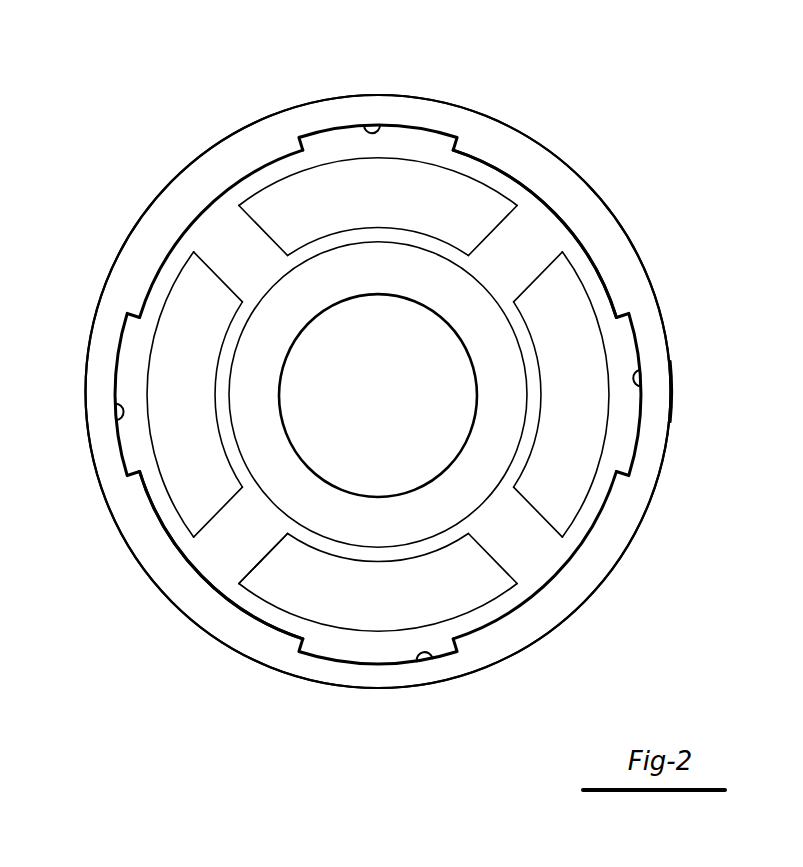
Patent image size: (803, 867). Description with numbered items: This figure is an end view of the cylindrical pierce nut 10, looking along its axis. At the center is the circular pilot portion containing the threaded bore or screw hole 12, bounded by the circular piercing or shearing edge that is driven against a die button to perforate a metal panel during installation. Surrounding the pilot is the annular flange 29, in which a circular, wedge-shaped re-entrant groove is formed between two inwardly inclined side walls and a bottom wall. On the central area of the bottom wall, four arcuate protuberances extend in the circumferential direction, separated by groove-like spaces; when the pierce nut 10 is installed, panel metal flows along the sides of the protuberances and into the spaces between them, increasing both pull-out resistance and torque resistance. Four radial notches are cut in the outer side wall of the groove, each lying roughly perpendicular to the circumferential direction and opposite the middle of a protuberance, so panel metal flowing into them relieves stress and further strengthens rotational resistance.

The pierce nut 10 is at (600, 85).
The threaded bore 12 is at (400, 313).
The annular flange 29 is at (657, 428).